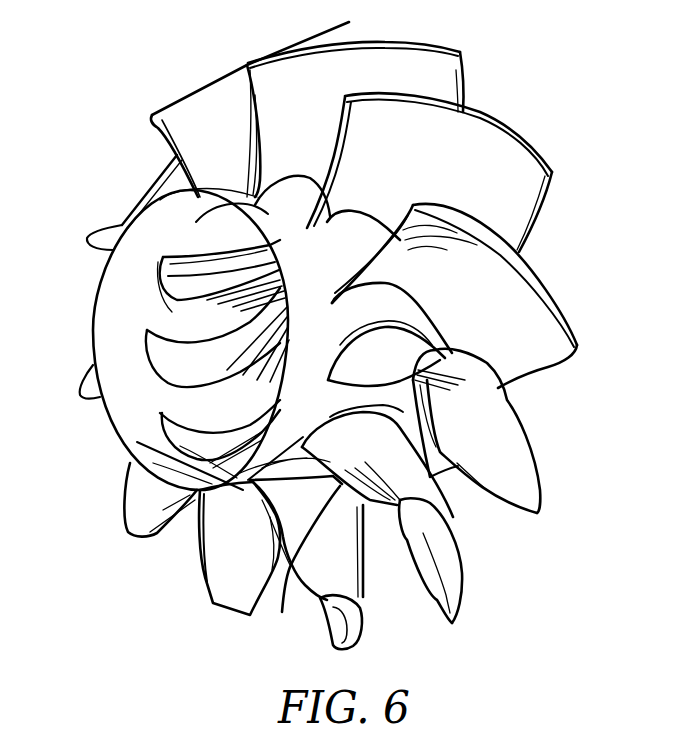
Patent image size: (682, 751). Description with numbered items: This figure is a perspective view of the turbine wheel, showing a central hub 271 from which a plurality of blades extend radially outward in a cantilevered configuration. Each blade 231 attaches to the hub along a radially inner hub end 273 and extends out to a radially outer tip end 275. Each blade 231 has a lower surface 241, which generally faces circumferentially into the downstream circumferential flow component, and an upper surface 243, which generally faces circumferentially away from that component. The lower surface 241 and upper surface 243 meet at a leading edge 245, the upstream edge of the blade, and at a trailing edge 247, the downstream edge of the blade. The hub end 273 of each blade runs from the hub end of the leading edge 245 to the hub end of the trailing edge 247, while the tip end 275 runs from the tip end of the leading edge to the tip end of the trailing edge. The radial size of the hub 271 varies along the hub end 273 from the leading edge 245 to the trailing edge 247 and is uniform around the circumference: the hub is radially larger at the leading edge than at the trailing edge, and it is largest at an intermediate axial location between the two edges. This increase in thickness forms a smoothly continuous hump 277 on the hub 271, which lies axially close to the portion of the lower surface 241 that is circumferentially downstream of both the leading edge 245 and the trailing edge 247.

The blade 231 is at (225, 562).
The lower surface 241 is at (514, 187).
The upper surface 243 is at (348, 582).
The leading edge 245 is at (290, 563).
The trailing edge 247 is at (549, 365).
The central hub 271 is at (132, 413).
The radially inner hub end 273 is at (318, 250).
The radially outer tip end 275 is at (474, 123).
The hump 277 is at (404, 318).